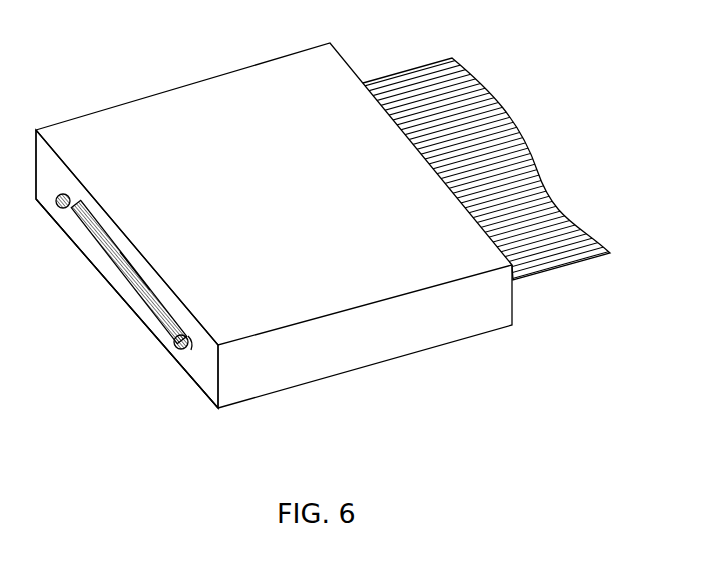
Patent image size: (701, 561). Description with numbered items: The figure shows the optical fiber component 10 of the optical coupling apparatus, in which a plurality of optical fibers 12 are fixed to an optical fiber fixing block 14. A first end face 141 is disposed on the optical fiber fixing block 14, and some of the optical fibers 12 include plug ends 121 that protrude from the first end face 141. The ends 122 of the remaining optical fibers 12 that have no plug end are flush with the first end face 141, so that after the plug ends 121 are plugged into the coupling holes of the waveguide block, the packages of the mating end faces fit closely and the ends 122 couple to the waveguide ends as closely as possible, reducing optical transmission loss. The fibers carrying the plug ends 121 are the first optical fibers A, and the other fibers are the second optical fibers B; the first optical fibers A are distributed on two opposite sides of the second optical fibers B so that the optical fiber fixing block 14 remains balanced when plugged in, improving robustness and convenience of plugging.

The optical fiber component 10 is at (338, 226).
The optical fibers 12 is at (522, 235).
The plug ends 121 is at (182, 370).
The ends of optical fibers 122 is at (147, 292).
The optical fiber fixing block 14 is at (377, 282).
The first end face 141 is at (45, 177).
The first optical fibers A is at (198, 341).
The second optical fibers B is at (150, 280).